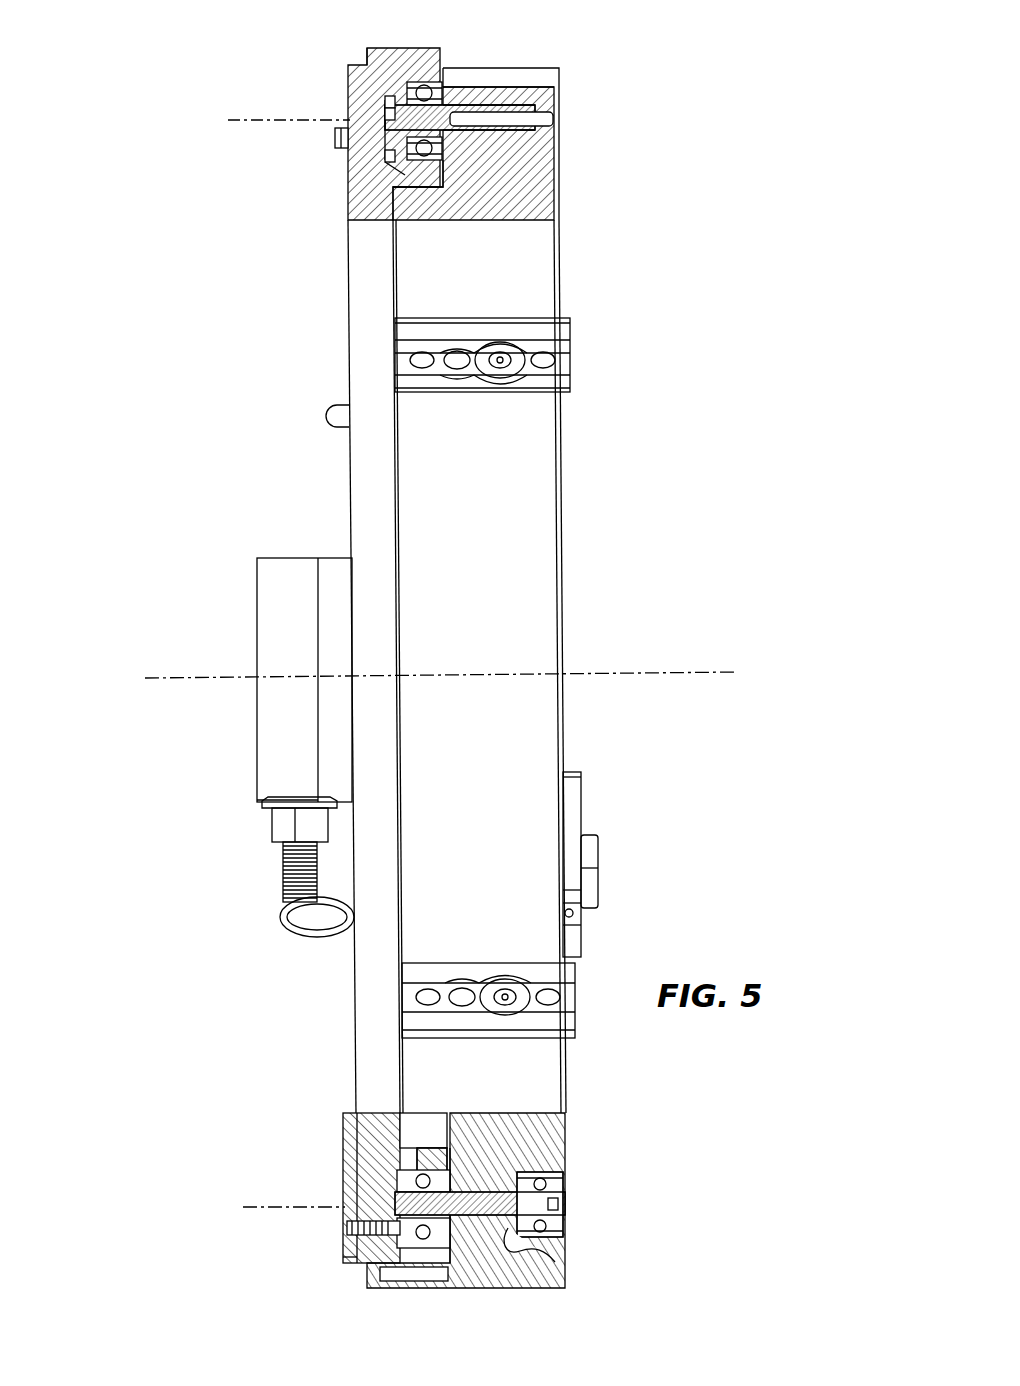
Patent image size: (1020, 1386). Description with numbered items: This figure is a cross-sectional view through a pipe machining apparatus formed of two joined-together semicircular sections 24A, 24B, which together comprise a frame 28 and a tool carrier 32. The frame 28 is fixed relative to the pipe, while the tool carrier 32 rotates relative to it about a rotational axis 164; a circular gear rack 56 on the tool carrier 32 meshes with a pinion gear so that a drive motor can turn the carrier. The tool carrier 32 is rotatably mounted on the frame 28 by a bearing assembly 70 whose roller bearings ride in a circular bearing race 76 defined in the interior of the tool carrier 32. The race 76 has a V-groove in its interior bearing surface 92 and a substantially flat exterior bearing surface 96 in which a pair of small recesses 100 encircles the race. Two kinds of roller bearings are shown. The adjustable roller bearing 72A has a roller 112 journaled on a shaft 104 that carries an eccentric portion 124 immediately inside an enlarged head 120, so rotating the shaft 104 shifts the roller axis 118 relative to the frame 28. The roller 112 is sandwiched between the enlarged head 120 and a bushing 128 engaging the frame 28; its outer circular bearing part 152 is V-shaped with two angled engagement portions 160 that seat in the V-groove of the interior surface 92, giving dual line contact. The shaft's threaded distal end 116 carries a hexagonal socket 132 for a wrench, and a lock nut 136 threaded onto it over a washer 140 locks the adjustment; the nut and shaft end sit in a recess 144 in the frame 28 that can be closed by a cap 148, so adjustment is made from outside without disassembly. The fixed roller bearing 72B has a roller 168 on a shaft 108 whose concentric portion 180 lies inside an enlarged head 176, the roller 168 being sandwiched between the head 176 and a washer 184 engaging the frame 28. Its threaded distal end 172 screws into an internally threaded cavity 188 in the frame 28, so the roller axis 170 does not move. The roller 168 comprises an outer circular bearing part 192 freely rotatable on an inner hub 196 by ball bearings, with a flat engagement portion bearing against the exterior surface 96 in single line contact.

The semicircular section 24A is at (333, 337).
The semicircular section 24B is at (345, 982).
The frame 28 is at (537, 172).
The tool carrier 32 is at (367, 202).
The circular gear rack 56 is at (368, 50).
The bearing assembly 70 is at (343, 1262).
The adjustable roller bearing 72A is at (464, 1228).
The fixed roller bearing 72B is at (481, 89).
The circular bearing race 76 is at (413, 1248).
The interior bearing surface 92 is at (395, 182).
The exterior bearing surface 96 is at (393, 92).
The recesses 100 is at (415, 83).
The shaft 104 is at (522, 1178).
The shaft 108 is at (440, 128).
The roller 112 is at (438, 1262).
The threaded distal end 116 is at (540, 1236).
The roller axis 118 is at (272, 1206).
The enlarged head 120 is at (345, 1229).
The eccentric portion 124 is at (400, 1175).
The bushing 128 is at (485, 1188).
The hexagonal socket 132 is at (565, 1205).
The lock nut 136 is at (567, 1186).
The washer 140 is at (470, 1230).
The recesses 144 is at (565, 1170).
The caps 148 is at (565, 1223).
The outer circular bearing part 152 is at (368, 1274).
The angled engagement portions 160 is at (446, 1168).
The rotational axis 164 is at (620, 674).
The roller 168 is at (388, 166).
The roller axis 170 is at (256, 118).
The threaded distal end 172 is at (515, 87).
The enlarged head 176 is at (335, 139).
The concentric portion 180 is at (448, 95).
The washer 184 is at (440, 135).
The internally threaded cavity 188 is at (553, 115).
The outer circular bearing part 192 is at (433, 160).
The inner hub 196 is at (387, 117).